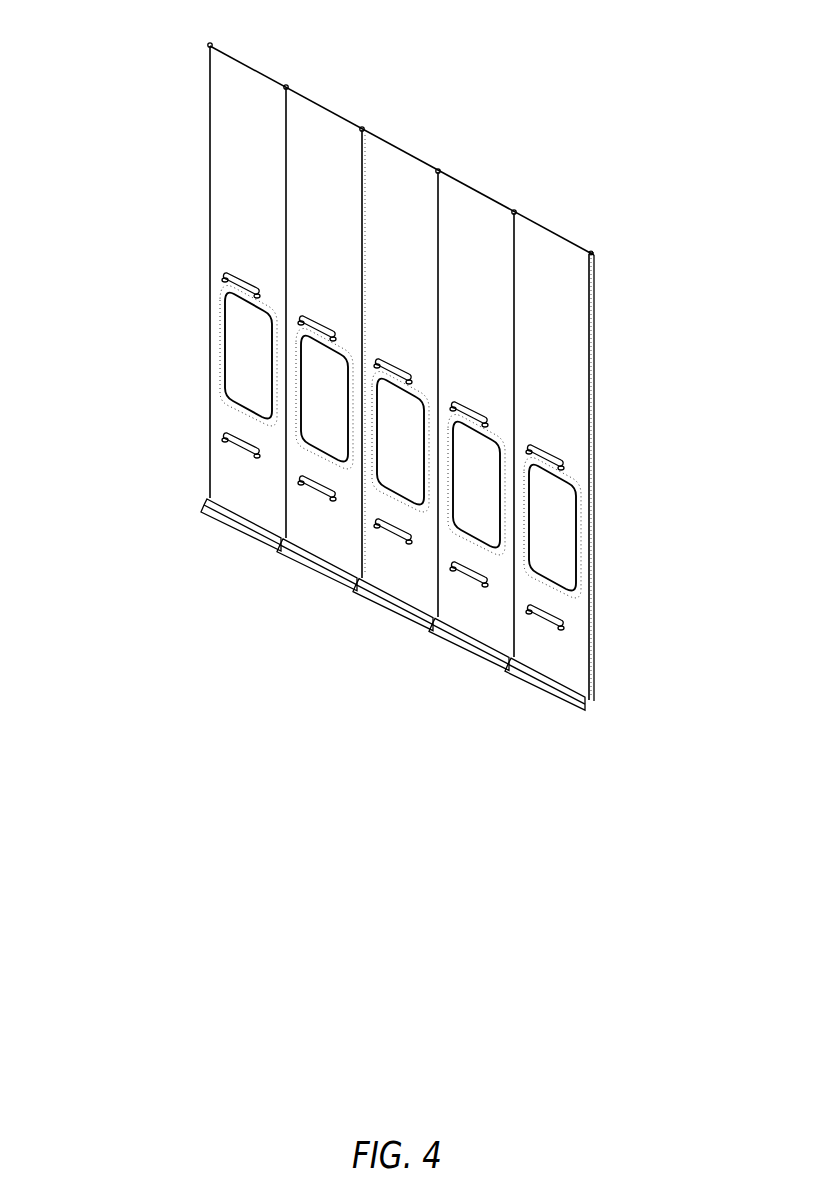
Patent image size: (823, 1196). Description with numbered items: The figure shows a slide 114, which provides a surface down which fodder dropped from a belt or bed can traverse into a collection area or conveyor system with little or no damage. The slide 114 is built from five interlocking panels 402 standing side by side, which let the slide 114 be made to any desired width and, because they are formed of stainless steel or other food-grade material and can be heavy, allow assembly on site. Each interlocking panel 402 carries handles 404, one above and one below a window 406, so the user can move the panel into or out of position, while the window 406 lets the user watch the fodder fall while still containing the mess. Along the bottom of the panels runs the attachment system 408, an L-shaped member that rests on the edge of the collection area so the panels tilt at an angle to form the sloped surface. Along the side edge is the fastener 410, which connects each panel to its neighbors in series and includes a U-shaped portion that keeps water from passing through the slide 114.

The slide 114 is at (392, 363).
The interlocking panels 402 is at (580, 386).
The handles 404 is at (557, 461).
The window 406 is at (566, 552).
The attachment system 408 is at (563, 693).
The fastener 410 is at (593, 302).